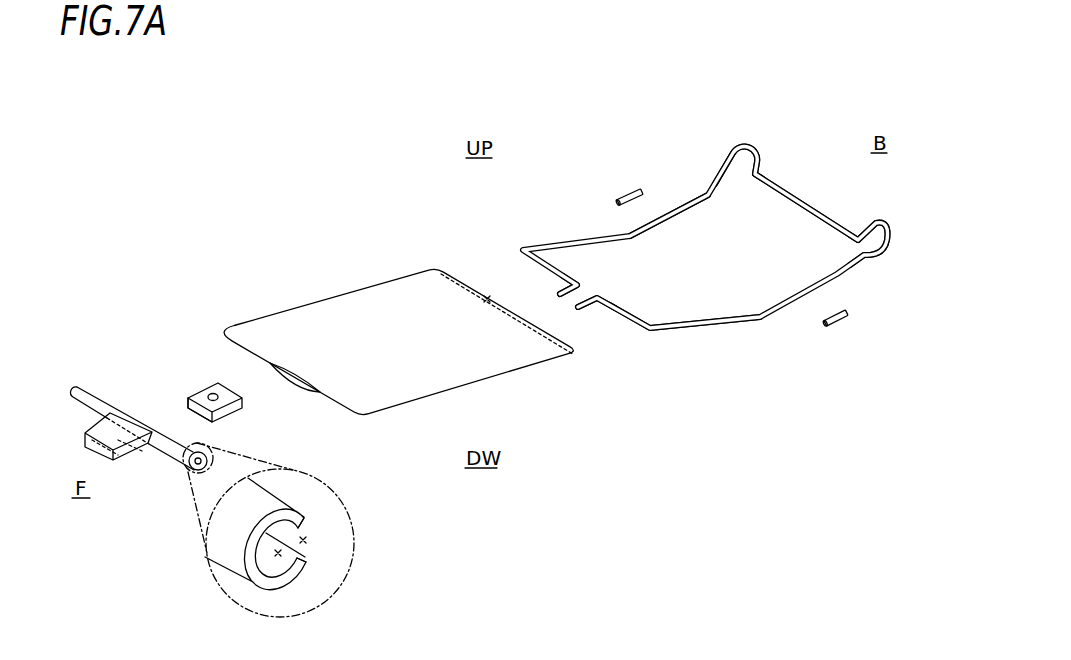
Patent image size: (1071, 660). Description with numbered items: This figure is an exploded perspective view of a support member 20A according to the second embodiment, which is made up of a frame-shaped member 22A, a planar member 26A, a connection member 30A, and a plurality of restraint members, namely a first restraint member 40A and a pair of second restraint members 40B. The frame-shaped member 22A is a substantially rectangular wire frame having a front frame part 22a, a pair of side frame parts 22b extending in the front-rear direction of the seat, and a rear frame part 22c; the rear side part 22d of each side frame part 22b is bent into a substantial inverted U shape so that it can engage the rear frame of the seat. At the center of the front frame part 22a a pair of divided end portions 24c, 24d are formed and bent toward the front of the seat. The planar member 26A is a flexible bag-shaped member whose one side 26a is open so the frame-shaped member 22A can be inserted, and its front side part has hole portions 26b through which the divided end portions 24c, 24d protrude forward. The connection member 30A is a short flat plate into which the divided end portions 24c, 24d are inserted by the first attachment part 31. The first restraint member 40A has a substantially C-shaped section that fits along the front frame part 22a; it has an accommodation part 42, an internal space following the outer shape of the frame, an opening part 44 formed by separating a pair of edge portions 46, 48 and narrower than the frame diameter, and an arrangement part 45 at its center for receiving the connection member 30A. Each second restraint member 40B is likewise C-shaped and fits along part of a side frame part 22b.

The support member 20A is at (270, 233).
The frame-shaped member 22A is at (572, 236).
The front frame part 22a is at (637, 327).
The side frame part 22b is at (673, 217).
The rear frame part 22c is at (809, 214).
The rear side part 22d is at (720, 166).
The divided end portion 24c is at (558, 292).
The divided end portion 24d is at (590, 303).
The planar member 26A is at (343, 288).
The one side 26a is at (486, 297).
The hole portion 26b is at (291, 385).
The connection member 30A is at (193, 385).
The first attachment part 31 is at (247, 397).
The first restraint member 40A is at (83, 373).
The second restraint member 40B is at (635, 185).
The accommodation part 42 is at (282, 556).
The opening part 44 is at (312, 540).
The arrangement part 45 is at (133, 458).
The edge portion 46 is at (308, 517).
The edge portion 48 is at (310, 556).